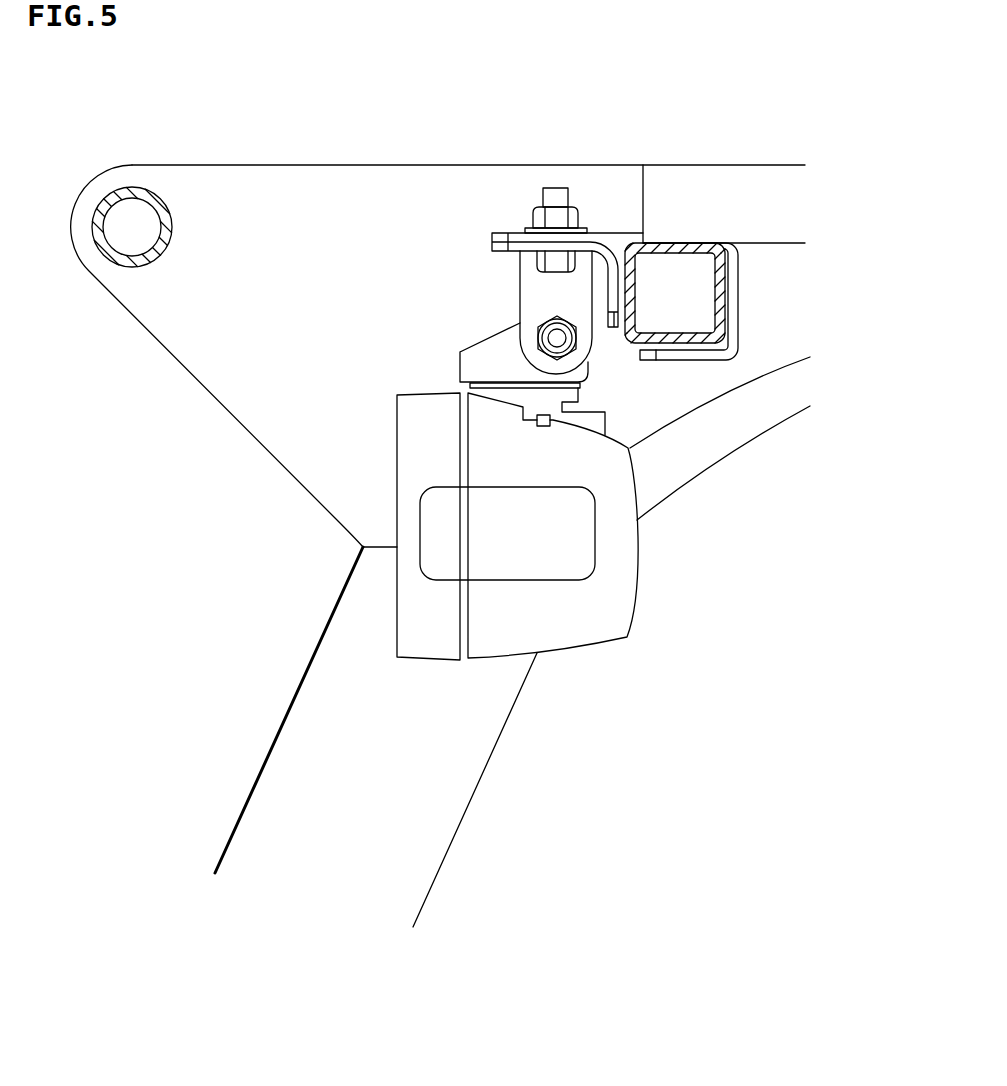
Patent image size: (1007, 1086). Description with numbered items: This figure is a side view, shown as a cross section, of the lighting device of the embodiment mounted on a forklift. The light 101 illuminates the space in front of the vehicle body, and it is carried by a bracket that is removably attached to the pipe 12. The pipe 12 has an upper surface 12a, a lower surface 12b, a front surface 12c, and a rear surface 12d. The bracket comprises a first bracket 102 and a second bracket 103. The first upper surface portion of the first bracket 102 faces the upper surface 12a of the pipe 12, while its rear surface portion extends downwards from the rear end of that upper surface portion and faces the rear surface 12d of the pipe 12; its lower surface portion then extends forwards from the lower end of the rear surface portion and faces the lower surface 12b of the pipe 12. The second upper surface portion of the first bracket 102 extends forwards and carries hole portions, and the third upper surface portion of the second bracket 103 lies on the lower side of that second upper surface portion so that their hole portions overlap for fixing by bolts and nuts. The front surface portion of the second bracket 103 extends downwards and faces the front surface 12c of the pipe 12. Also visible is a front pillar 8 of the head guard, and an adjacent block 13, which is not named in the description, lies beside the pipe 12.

The front pillar 8 is at (430, 813).
The pipe 12 is at (726, 284).
The upper surface of the pipe 12a is at (668, 248).
The lower surface of the pipe 12b is at (688, 348).
The front surface of the pipe 12c is at (628, 304).
The rear surface of the pipe 12d is at (726, 325).
The frame block 13 is at (782, 197).
The light 101 is at (430, 453).
The first bracket 102 is at (608, 233).
The second bracket 103 is at (535, 247).